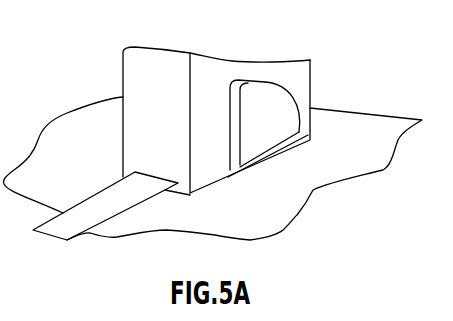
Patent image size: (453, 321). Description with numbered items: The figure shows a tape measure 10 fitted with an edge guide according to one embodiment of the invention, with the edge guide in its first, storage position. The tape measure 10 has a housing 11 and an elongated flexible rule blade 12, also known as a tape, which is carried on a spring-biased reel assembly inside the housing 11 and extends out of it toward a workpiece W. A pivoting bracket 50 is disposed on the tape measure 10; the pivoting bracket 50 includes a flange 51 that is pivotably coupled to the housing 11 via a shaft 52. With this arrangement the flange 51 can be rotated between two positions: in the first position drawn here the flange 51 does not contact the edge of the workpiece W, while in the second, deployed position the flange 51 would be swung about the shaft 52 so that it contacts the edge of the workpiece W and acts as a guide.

The tape measure 10 is at (292, 77).
The housing 11 is at (163, 65).
The elongated flexible rule blade 12 is at (94, 207).
The pivoting bracket 50 is at (279, 111).
The flange 51 is at (263, 90).
The shaft 52 is at (247, 160).
The workpiece W is at (397, 122).